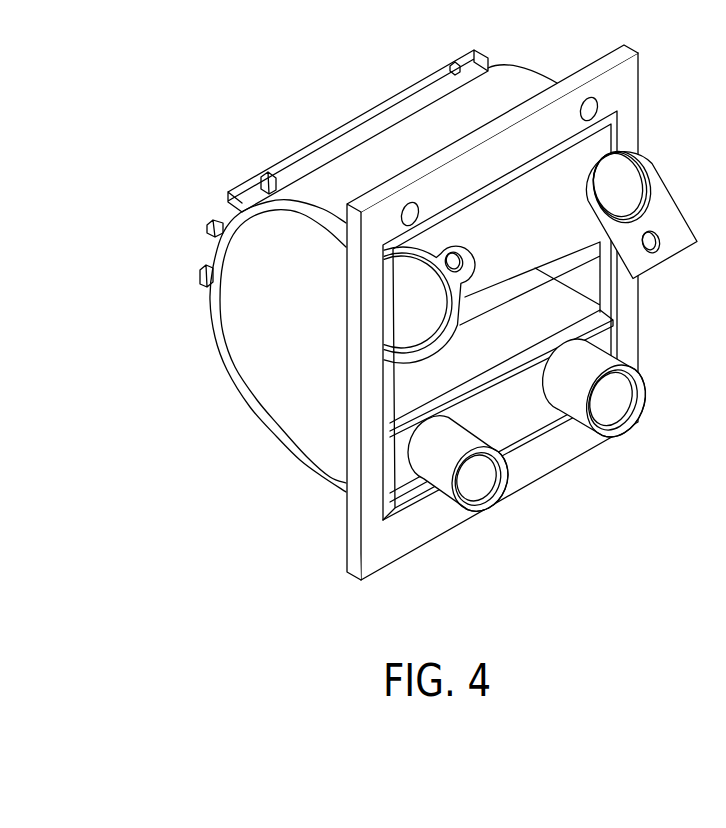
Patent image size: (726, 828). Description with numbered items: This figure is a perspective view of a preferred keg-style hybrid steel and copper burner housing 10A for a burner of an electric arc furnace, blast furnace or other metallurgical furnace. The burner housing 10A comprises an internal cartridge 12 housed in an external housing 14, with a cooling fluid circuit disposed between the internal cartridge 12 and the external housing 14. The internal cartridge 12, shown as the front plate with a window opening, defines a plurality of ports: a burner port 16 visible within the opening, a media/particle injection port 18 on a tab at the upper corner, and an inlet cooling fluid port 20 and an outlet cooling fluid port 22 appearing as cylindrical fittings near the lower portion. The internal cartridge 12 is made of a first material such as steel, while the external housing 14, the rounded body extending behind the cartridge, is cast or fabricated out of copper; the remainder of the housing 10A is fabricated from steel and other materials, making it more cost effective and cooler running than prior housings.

The burner housing 10A is at (418, 312).
The internal cartridge 12 is at (553, 453).
The external housing 14 is at (263, 279).
The burner port 16 is at (412, 302).
The media/particle injection port 18 is at (630, 177).
The inlet cooling fluid port 20 is at (477, 501).
The outlet cooling fluid port 22 is at (630, 402).